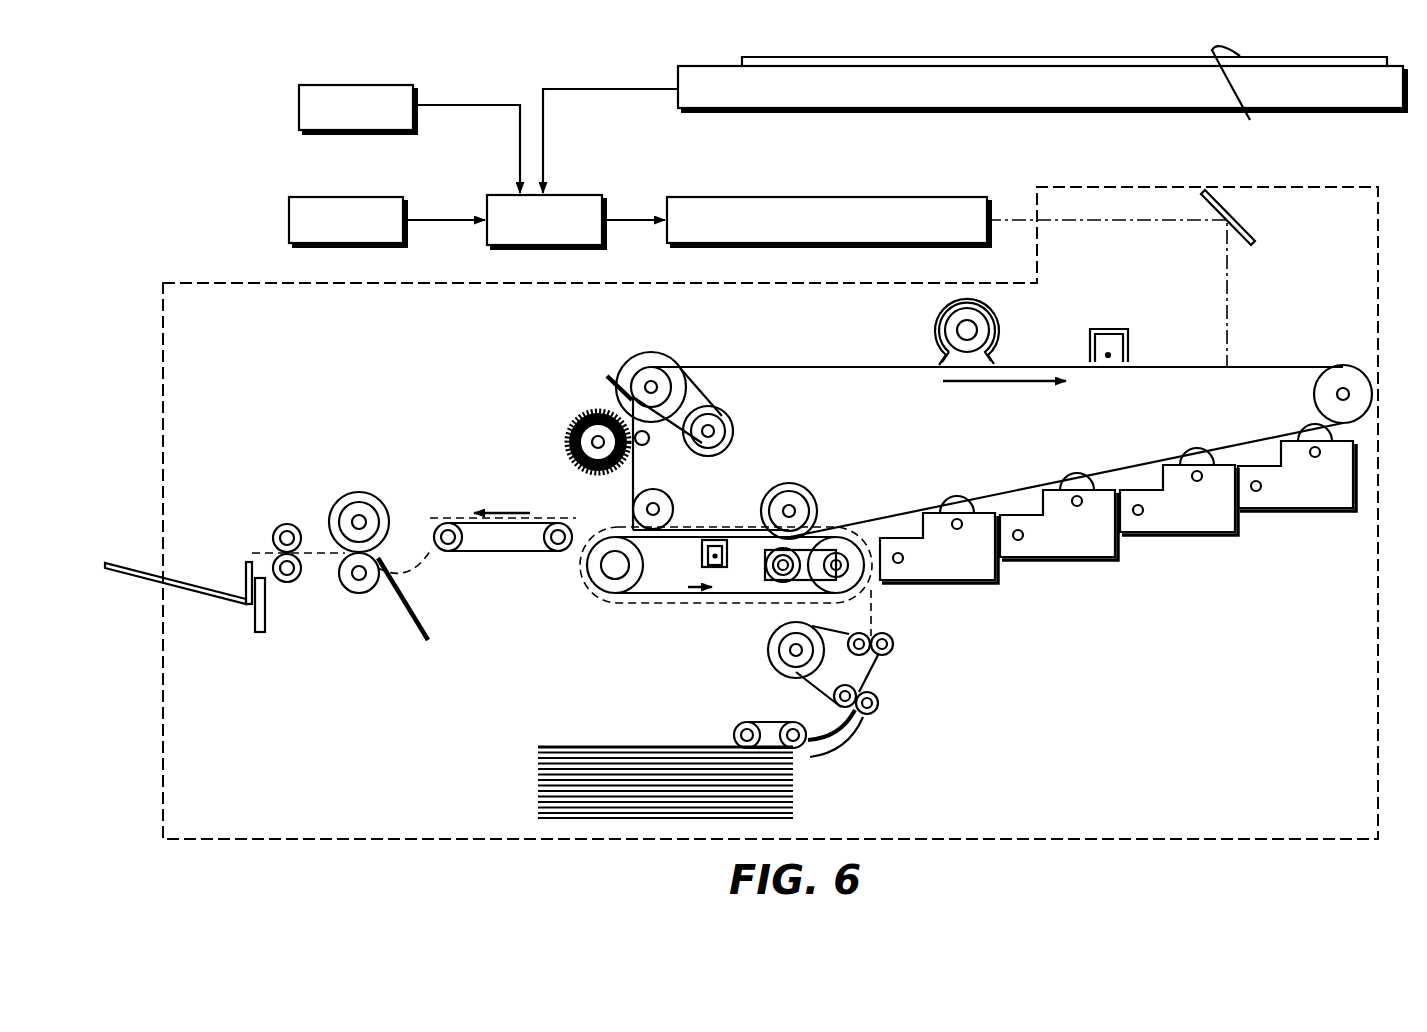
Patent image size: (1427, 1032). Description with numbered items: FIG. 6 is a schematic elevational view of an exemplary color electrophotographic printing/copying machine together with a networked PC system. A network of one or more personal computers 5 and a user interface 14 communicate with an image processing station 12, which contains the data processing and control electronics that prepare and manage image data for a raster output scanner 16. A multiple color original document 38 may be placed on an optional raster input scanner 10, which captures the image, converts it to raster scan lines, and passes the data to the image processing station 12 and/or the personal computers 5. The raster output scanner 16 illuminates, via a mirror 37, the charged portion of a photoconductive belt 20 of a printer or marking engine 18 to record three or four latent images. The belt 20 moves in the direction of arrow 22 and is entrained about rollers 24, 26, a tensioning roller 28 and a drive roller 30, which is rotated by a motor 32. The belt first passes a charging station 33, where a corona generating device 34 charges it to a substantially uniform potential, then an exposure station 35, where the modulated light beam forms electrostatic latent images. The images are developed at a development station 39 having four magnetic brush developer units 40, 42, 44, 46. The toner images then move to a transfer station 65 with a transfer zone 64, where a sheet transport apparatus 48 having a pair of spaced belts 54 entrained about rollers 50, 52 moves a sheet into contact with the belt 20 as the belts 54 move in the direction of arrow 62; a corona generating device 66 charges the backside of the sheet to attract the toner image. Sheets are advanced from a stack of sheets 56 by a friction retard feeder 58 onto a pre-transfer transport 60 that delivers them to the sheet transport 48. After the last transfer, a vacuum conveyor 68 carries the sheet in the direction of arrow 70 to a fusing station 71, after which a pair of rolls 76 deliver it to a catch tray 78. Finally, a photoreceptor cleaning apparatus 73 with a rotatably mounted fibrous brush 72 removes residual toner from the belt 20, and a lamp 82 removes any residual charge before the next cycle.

The personal computer network 5 is at (270, 100).
The raster input scanner 10 is at (660, 75).
The image processing station 12 is at (601, 186).
The user interface 14 is at (287, 186).
The raster output scanner 16 is at (868, 186).
The printer or marking engine 18 is at (1381, 164).
The photoconductive belt 20 is at (1050, 366).
The arrow 22 is at (1008, 385).
The tensioning roller 24 is at (665, 497).
The roller 26 is at (810, 497).
The tensioning roller 28 is at (1347, 380).
The drive roller 30 is at (635, 362).
The motor 32 is at (735, 428).
The charging station 33 is at (1148, 318).
The corona generating device 34 is at (1118, 328).
The exposure station 35 is at (1246, 356).
The mirror 37 is at (1258, 232).
The multiple color original document 38 is at (1241, 103).
The development station 39 is at (1118, 537).
The developer unit 40 is at (1313, 505).
The developer unit 42 is at (1193, 525).
The developer unit 44 is at (1070, 550).
The developer unit 46 is at (952, 573).
The sheet transport apparatus 48 is at (749, 576).
The roller 50 is at (612, 585).
The roller 52 is at (845, 580).
The belts 54 is at (632, 545).
The stack of sheets 56 is at (571, 748).
The friction retard feeder 58 is at (770, 722).
The pre-transfer transport 60 is at (865, 672).
The arrow 62 is at (700, 598).
The transfer zone 64 is at (723, 521).
The transfer station 65 is at (741, 546).
The corona generating device 66 is at (700, 553).
The vacuum conveyor 68 is at (500, 553).
The arrow 70 is at (512, 511).
The fusing station 71 is at (353, 491).
The fibrous brush 72 is at (568, 420).
The photoreceptor cleaning apparatus 73 is at (583, 383).
The pair of rolls 76 is at (288, 524).
The catch tray 78 is at (214, 598).
The lamp 82 is at (945, 332).